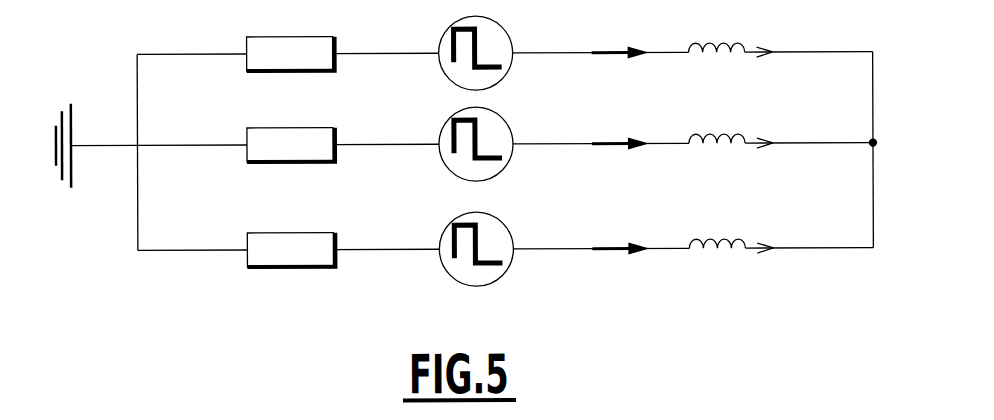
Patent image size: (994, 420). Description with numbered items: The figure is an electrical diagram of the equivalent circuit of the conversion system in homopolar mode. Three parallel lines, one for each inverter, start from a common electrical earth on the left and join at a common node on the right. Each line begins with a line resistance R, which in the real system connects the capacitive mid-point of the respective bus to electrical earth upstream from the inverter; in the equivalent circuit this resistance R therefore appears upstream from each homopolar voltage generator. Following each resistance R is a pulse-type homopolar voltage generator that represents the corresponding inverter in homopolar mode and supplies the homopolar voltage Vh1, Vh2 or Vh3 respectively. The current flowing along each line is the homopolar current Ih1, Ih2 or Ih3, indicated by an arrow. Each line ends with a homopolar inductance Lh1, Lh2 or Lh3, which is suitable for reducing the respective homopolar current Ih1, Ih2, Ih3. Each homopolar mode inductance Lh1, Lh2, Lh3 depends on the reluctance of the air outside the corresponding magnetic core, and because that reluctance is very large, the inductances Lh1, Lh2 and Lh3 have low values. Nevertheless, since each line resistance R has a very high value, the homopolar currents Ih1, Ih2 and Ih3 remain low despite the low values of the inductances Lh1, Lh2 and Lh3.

The line resistance R is at (291, 139).
The homopolar voltage Vh1 is at (451, 46).
The homopolar voltage Vh2 is at (452, 137).
The homopolar voltage Vh3 is at (452, 242).
The homopolar current Ih1 is at (619, 33).
The homopolar current Ih2 is at (620, 124).
The homopolar current Ih3 is at (620, 229).
The homopolar inductance Lh1 is at (730, 29).
The homopolar inductance Lh2 is at (731, 119).
The homopolar inductance Lh3 is at (731, 224).